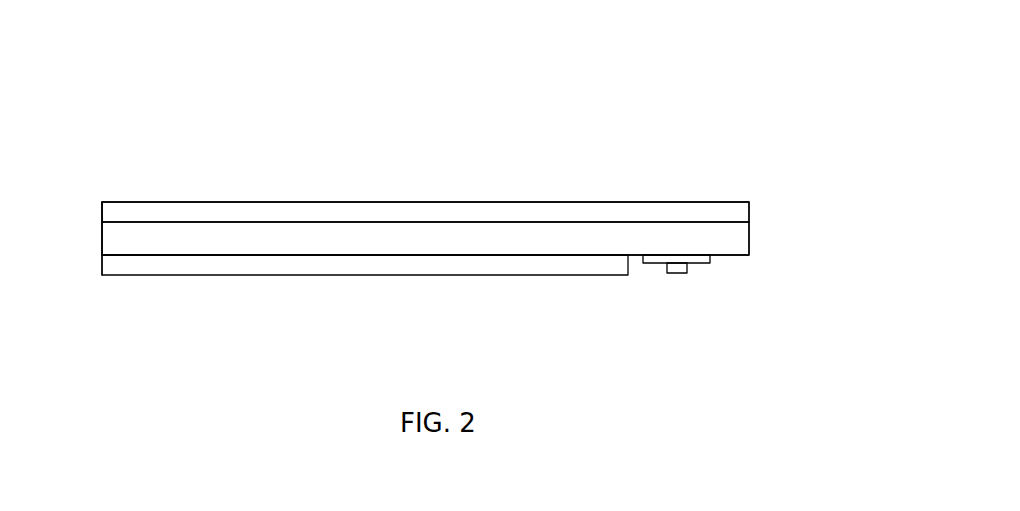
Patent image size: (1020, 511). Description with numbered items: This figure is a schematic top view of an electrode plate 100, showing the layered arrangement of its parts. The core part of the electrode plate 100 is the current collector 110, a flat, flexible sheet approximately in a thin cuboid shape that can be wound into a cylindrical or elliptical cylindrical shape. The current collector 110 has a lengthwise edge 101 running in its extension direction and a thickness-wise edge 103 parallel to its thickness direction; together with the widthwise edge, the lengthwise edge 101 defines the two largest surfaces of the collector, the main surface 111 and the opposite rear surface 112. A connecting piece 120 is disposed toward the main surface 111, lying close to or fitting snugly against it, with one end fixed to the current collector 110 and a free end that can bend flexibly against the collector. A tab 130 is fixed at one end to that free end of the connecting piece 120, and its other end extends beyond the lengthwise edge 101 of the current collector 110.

The electrode plate 100 is at (722, 100).
The current collector 110 is at (733, 232).
The main surface 111 is at (279, 253).
The rear surface 112 is at (350, 218).
The lengthwise edge 101 is at (170, 277).
The thickness-wise edge 103 is at (100, 240).
The connecting piece 120 is at (708, 262).
The tab 130 is at (687, 273).